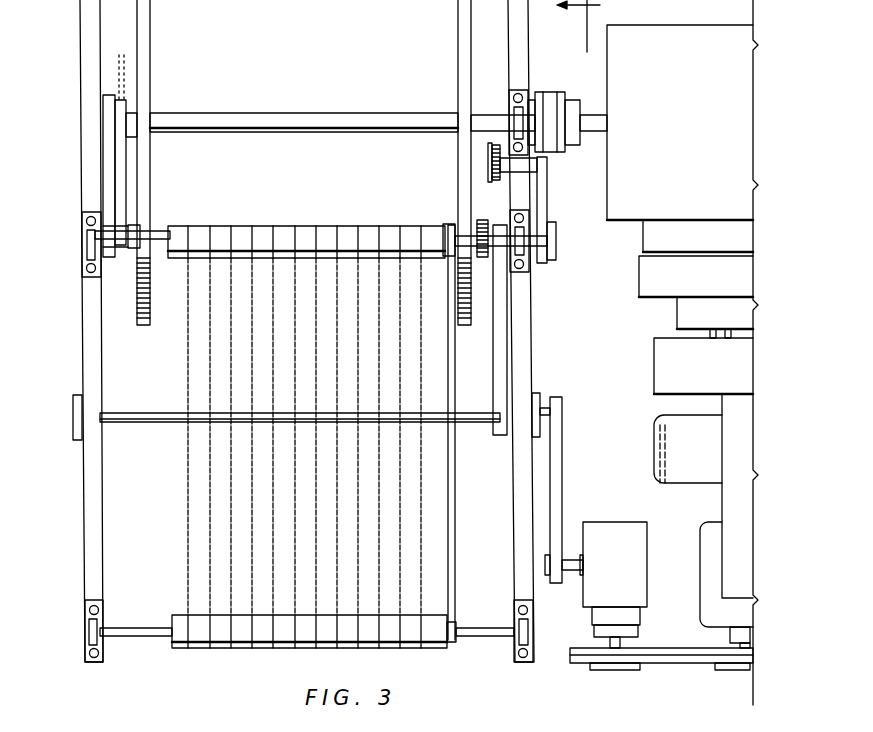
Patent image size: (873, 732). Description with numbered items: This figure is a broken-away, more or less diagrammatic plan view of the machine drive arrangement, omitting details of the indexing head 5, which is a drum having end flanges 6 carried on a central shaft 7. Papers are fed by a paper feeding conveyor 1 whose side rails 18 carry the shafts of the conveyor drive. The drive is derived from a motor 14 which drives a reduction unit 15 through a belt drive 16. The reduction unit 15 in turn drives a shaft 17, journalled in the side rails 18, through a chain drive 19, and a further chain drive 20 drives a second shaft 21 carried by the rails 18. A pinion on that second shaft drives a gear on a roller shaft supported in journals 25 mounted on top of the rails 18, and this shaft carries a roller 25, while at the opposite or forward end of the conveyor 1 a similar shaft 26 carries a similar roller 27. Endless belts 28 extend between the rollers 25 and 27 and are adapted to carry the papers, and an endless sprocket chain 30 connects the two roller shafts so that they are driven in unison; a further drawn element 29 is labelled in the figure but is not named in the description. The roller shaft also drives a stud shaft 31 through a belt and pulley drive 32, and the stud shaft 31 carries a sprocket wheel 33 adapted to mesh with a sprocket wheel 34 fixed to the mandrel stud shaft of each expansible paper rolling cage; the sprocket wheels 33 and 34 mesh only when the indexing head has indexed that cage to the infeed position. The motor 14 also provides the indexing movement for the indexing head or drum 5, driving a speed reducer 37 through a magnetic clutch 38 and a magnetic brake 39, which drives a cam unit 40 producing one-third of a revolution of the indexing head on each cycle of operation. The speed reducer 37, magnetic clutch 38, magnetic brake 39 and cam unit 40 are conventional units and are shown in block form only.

The paper feeding conveyor 1 is at (155, 493).
The indexing head 5 is at (592, 288).
The end flanges 6 is at (148, 72).
The central shaft 7 is at (308, 125).
The motor 14 is at (708, 584).
The reduction unit 15 is at (638, 562).
The belt drive 16 is at (696, 661).
The shaft 17 is at (138, 414).
The side rails 18 is at (90, 338).
The chain drive 19 is at (558, 462).
The chain drive 20 is at (497, 319).
The second shaft 21 is at (160, 228).
The roller 25 is at (346, 228).
The shaft 26 is at (148, 634).
The roller 27 is at (245, 636).
The endless belts 28 is at (236, 564).
The gear 29 is at (448, 229).
The endless sprocket chain 30 is at (453, 517).
The stud shaft 31 is at (512, 172).
The belt and pulley drive 32 is at (547, 188).
The sprocket wheel 33 is at (492, 178).
The sprocket wheel 34 is at (497, 148).
The speed reducer 37 is at (676, 438).
The magnetic clutch 38 is at (662, 369).
The magnetic brake 39 is at (647, 275).
The cam unit 40 is at (666, 191).